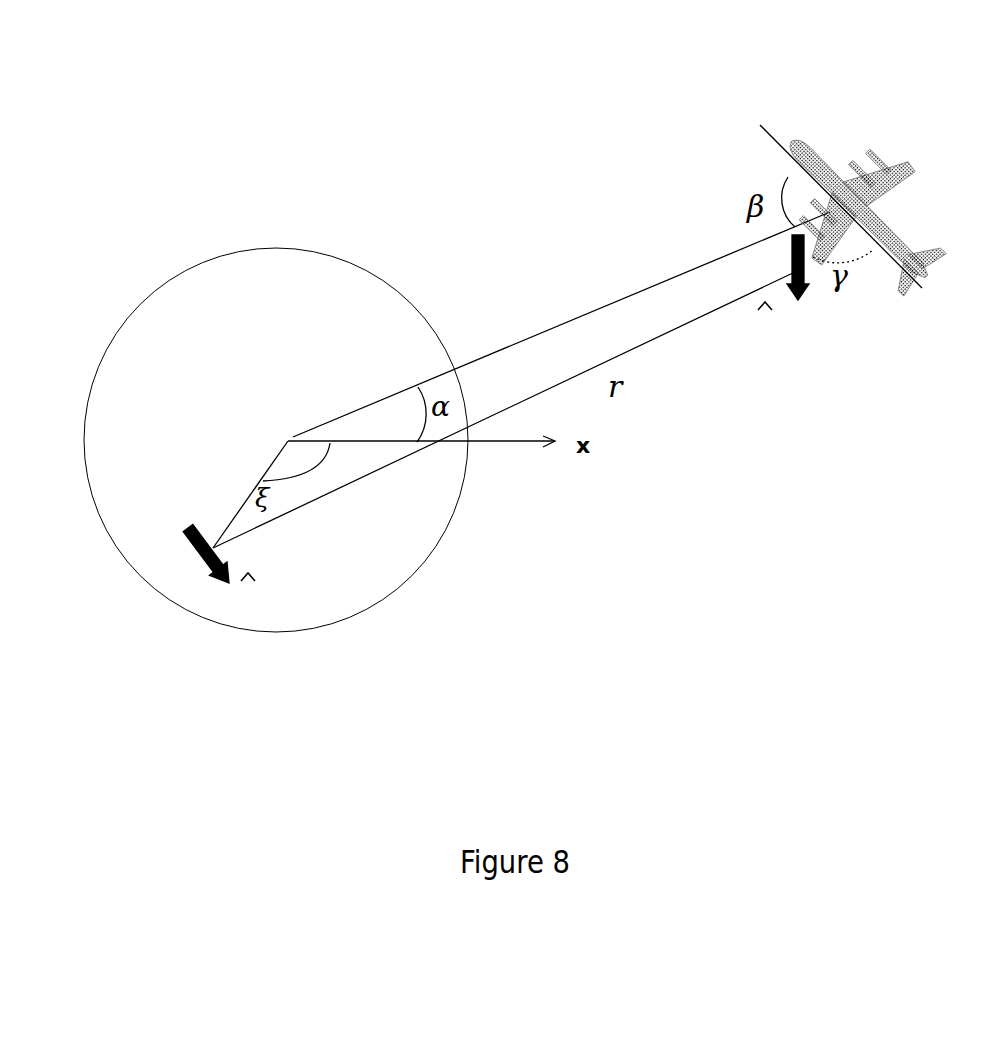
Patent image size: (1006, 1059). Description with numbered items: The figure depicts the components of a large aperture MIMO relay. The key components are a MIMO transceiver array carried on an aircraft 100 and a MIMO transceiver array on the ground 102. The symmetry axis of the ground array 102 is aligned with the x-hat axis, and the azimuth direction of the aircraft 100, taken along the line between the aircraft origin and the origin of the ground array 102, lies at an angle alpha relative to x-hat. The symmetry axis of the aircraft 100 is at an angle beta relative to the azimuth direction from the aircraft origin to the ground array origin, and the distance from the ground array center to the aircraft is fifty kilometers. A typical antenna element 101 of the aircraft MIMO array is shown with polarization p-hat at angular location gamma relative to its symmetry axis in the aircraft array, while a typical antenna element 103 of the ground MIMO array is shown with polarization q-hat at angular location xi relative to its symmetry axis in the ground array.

The aircraft 100 is at (905, 157).
The antenna element of the aircraft MIMO array 101 is at (793, 304).
The MIMO transceiver array on the ground 102 is at (367, 268).
The antenna element of the ground MIMO array 103 is at (187, 522).